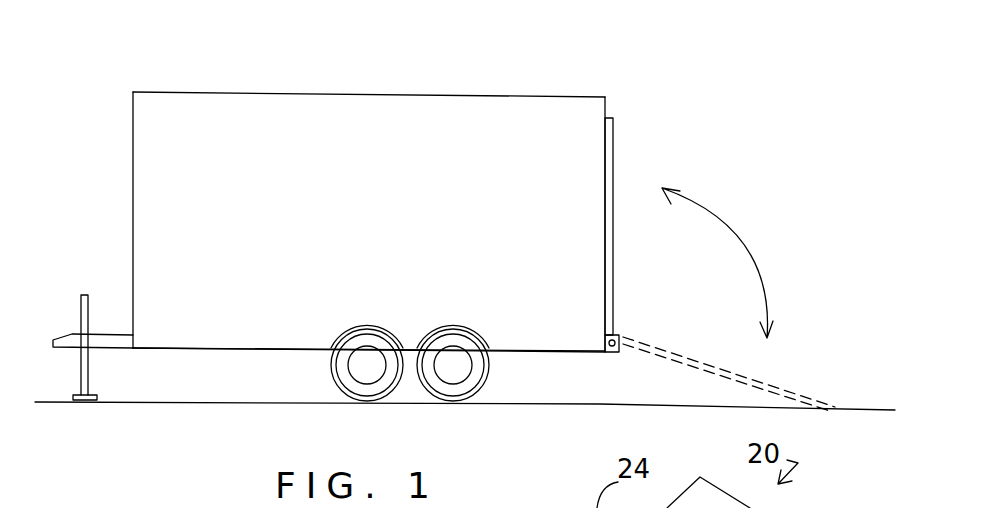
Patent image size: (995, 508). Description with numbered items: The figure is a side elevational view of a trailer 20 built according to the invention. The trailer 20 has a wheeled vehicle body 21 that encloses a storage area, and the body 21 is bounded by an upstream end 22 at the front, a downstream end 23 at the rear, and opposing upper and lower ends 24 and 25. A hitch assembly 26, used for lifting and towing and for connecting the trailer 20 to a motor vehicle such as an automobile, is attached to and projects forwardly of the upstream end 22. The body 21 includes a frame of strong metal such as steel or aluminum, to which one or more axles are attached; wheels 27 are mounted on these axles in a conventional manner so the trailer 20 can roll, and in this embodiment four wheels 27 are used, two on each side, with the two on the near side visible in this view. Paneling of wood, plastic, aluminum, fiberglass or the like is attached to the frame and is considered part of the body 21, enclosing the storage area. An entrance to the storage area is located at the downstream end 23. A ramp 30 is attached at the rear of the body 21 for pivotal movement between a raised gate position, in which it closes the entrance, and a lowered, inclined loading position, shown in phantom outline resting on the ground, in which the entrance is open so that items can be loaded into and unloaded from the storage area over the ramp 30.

The trailer 20 is at (410, 52).
The wheeled vehicle body 21 is at (523, 91).
The upstream end 22 is at (133, 185).
The downstream end 23 is at (612, 234).
The upper end 24 is at (263, 100).
The lower end 25 is at (533, 351).
The hitch assembly 26 is at (72, 347).
The wheels 27 is at (357, 393).
The ramp 30 is at (612, 181).